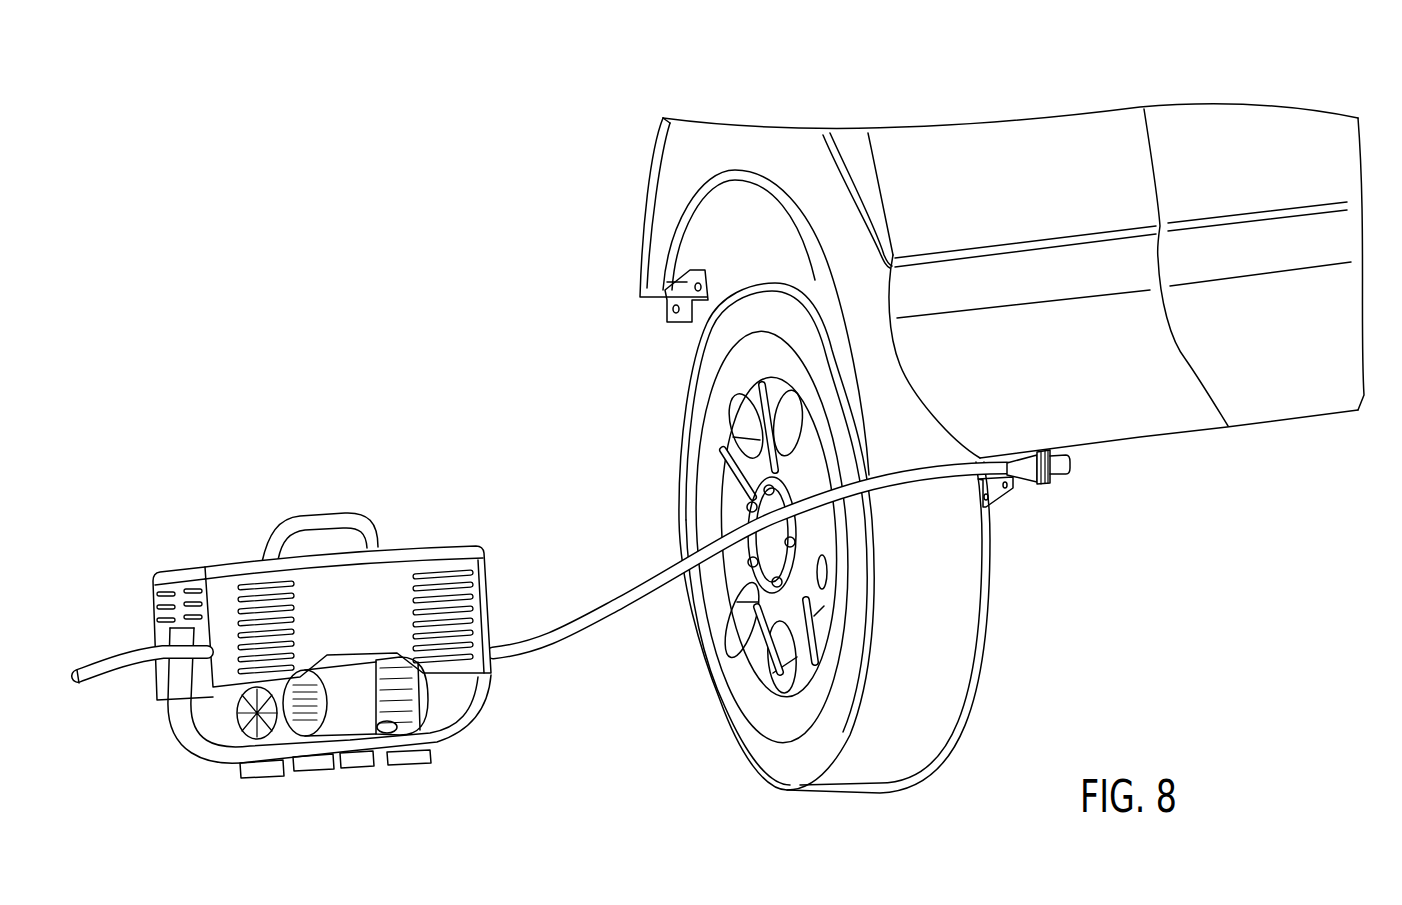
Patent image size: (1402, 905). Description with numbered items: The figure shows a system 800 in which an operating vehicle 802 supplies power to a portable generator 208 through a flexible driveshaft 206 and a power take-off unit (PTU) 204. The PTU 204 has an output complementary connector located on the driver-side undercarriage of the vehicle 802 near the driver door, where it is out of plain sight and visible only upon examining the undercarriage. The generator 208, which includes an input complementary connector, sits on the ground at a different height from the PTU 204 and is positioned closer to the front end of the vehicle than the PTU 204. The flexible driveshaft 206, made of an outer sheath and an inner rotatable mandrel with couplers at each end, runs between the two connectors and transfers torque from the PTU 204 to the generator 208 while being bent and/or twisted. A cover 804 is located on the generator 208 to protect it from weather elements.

The system 800 is at (1274, 65).
The vehicle 802 is at (1300, 410).
The cover 804 is at (425, 556).
The generator 208 is at (262, 439).
The flexible driveshaft 206 is at (672, 581).
The power take-off unit (PTU) 204 is at (1071, 530).